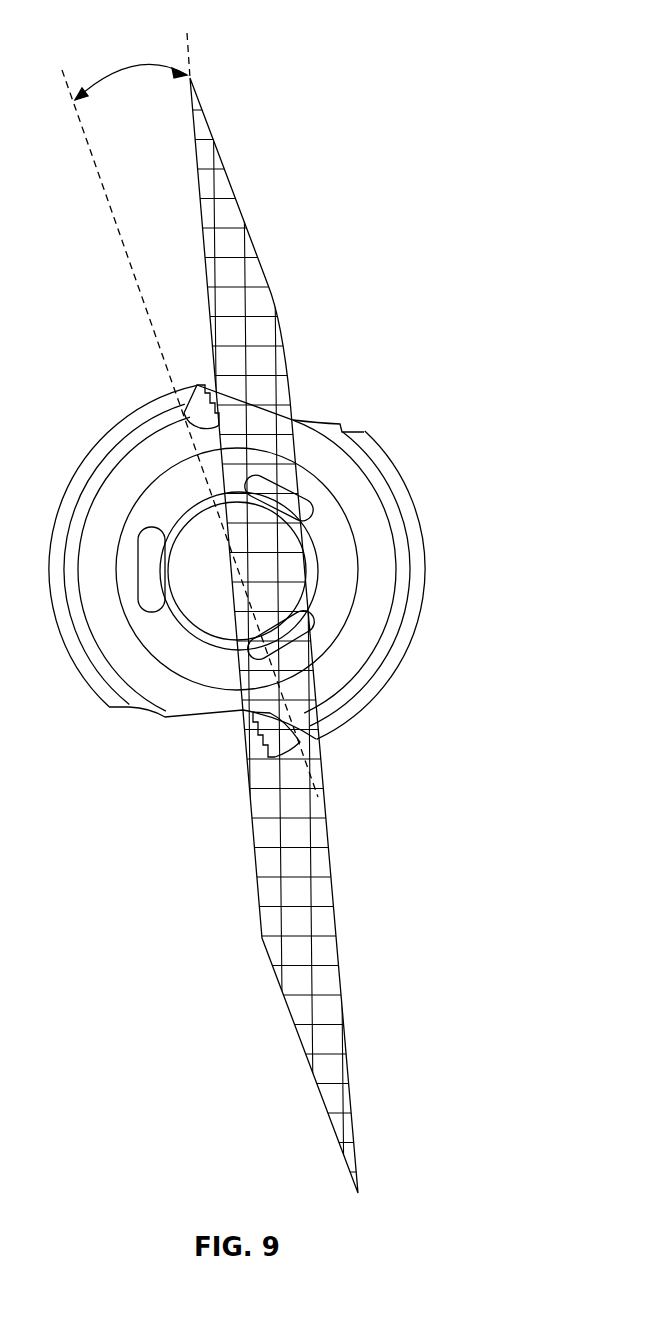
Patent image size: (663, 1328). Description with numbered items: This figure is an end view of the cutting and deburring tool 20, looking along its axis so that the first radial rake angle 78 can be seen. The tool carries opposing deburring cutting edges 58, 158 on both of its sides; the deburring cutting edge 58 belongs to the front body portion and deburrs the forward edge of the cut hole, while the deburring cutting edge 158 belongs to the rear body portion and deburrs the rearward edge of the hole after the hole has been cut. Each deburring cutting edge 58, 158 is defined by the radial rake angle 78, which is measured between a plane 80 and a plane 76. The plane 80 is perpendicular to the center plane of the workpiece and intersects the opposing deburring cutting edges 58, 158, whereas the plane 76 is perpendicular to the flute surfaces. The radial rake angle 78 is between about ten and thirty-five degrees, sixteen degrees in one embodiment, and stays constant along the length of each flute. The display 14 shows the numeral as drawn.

The cutting and deburring tool 20 is at (418, 449).
The display 14 is at (159, 542).
The plane 76 is at (270, 292).
The radial rake angle 78 is at (124, 68).
The plane 80 is at (142, 298).
The deburring cutting edge 58 is at (177, 392).
The deburring cutting edge 158 is at (300, 742).